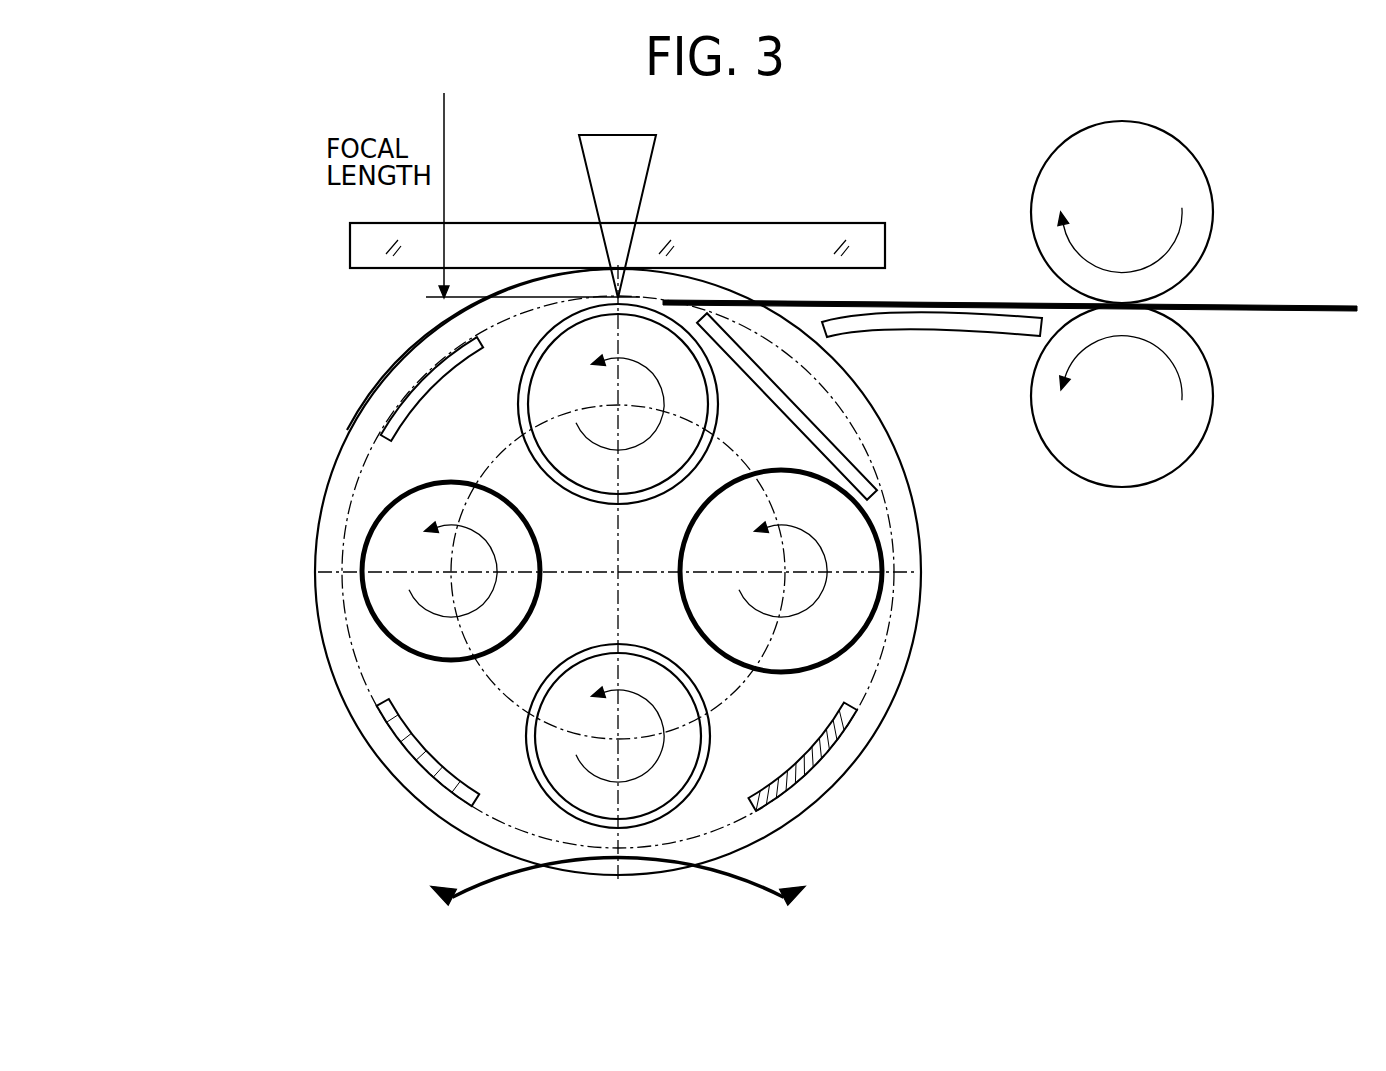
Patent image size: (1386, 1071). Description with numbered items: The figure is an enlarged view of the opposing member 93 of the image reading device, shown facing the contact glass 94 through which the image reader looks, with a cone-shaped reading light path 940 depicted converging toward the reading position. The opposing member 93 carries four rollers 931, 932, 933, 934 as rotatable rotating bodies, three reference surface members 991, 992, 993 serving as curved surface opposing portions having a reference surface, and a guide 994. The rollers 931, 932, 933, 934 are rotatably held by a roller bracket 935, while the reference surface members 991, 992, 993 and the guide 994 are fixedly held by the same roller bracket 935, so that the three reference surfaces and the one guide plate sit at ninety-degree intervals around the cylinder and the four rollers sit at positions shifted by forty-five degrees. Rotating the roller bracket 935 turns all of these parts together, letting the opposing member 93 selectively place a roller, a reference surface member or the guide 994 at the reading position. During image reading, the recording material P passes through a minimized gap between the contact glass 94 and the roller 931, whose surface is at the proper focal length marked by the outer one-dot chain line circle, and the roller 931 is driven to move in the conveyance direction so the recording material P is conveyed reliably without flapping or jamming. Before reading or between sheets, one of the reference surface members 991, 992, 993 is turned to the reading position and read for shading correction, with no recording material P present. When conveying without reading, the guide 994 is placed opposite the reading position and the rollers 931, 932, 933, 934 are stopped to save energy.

The opposing member 93 is at (317, 740).
The roller 931 is at (519, 417).
The roller 932 is at (372, 617).
The roller 933 is at (688, 795).
The roller 934 is at (870, 620).
The roller bracket 935 is at (347, 430).
The reference surface member 991 is at (421, 382).
The reference surface member 992 is at (815, 766).
The reference surface member 993 is at (416, 762).
The guide 994 is at (812, 422).
The contact glass 94 is at (350, 240).
The laser beam (light) 940 is at (646, 177).
The recording material P is at (1292, 300).